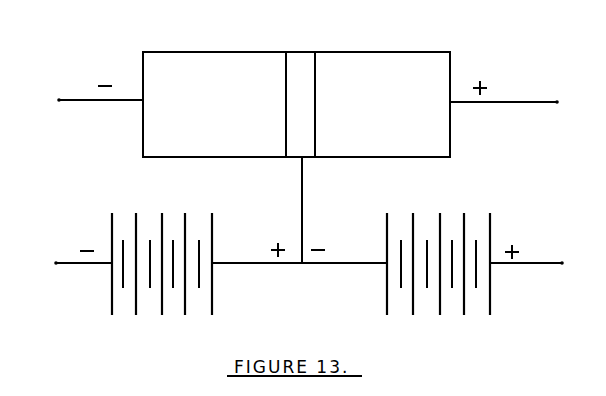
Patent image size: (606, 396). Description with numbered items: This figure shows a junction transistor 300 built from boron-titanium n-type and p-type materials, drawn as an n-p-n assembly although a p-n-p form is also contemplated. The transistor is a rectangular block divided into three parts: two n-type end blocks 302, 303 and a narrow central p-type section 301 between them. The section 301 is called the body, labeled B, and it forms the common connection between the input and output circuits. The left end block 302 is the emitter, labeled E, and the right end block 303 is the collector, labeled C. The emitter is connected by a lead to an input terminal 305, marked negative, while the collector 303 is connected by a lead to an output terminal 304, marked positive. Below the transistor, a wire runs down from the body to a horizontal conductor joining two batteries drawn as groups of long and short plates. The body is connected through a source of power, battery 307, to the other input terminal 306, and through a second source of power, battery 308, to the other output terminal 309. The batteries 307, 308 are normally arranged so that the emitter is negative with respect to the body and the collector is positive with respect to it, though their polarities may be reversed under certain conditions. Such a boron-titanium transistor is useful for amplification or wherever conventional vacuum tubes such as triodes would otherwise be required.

The junction transistor 300 is at (362, 42).
The body section 301 is at (303, 51).
The end block 302 is at (185, 51).
The collector 303 is at (397, 51).
The output terminal 304 is at (504, 92).
The input terminal 305 is at (95, 89).
The input terminal 306 is at (76, 254).
The battery 307 is at (162, 281).
The battery 308 is at (438, 281).
The output terminal 309 is at (527, 255).